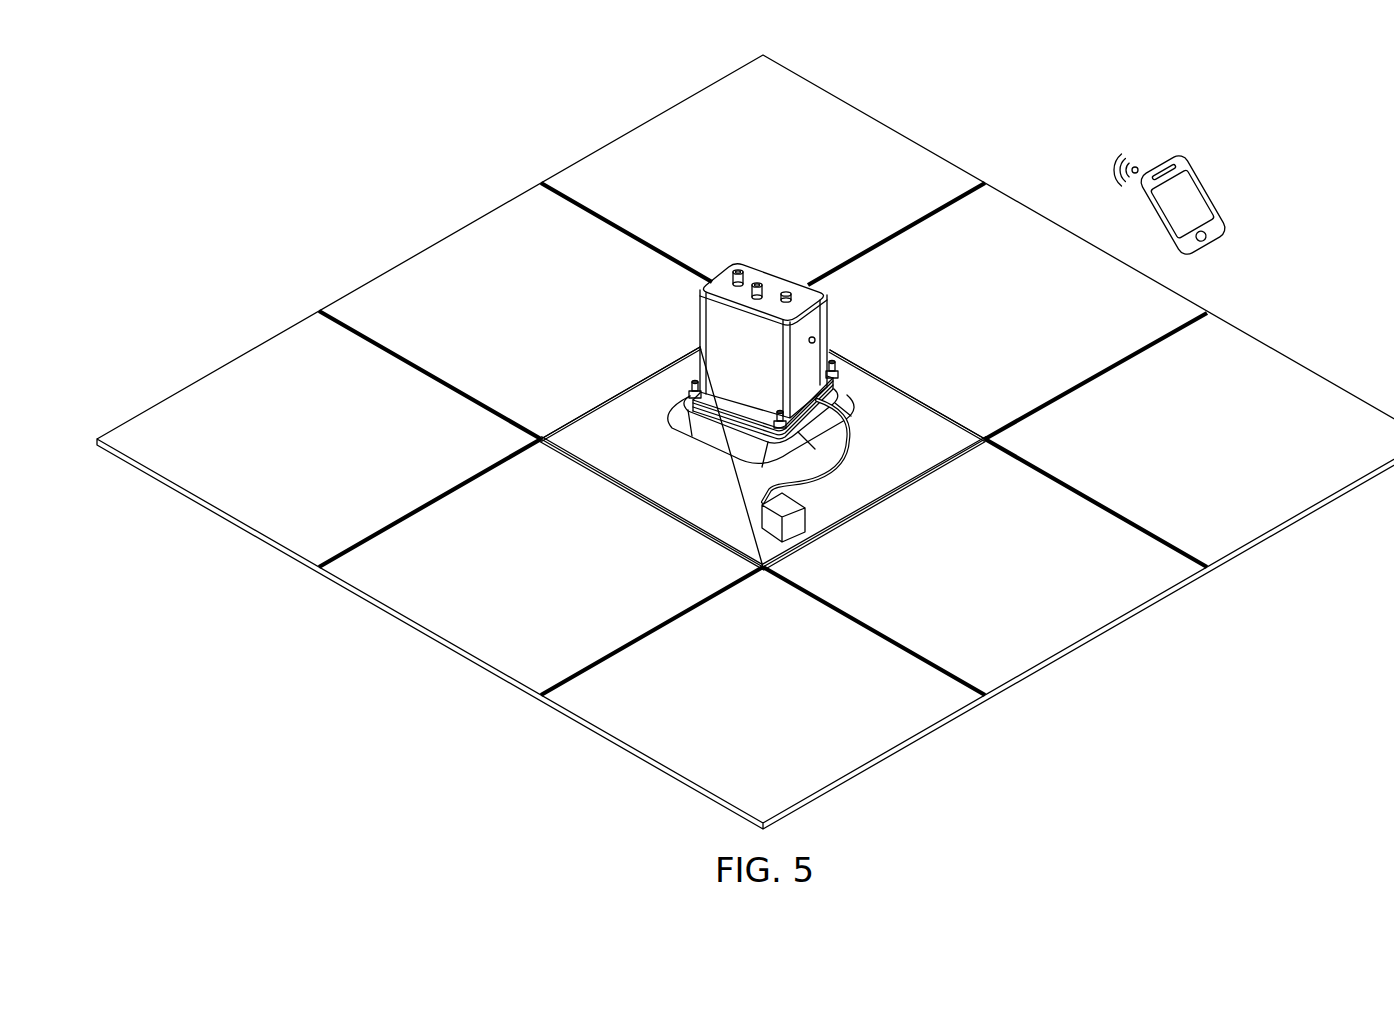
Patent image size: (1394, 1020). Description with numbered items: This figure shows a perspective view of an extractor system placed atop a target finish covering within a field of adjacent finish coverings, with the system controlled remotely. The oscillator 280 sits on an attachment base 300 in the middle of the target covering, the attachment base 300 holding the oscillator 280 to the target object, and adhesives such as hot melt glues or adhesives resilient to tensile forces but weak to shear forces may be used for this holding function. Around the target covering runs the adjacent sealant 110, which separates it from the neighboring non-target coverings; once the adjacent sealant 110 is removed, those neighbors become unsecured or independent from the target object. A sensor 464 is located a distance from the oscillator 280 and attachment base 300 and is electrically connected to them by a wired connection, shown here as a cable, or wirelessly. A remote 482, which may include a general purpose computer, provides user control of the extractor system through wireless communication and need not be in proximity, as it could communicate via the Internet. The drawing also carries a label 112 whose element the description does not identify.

The adjacent sealant 110 is at (900, 488).
The tile seam 112 is at (1078, 390).
The oscillator 280 is at (766, 373).
The attachment base 300 is at (723, 447).
The sensor 464 is at (767, 518).
The remote 482 is at (1215, 192).